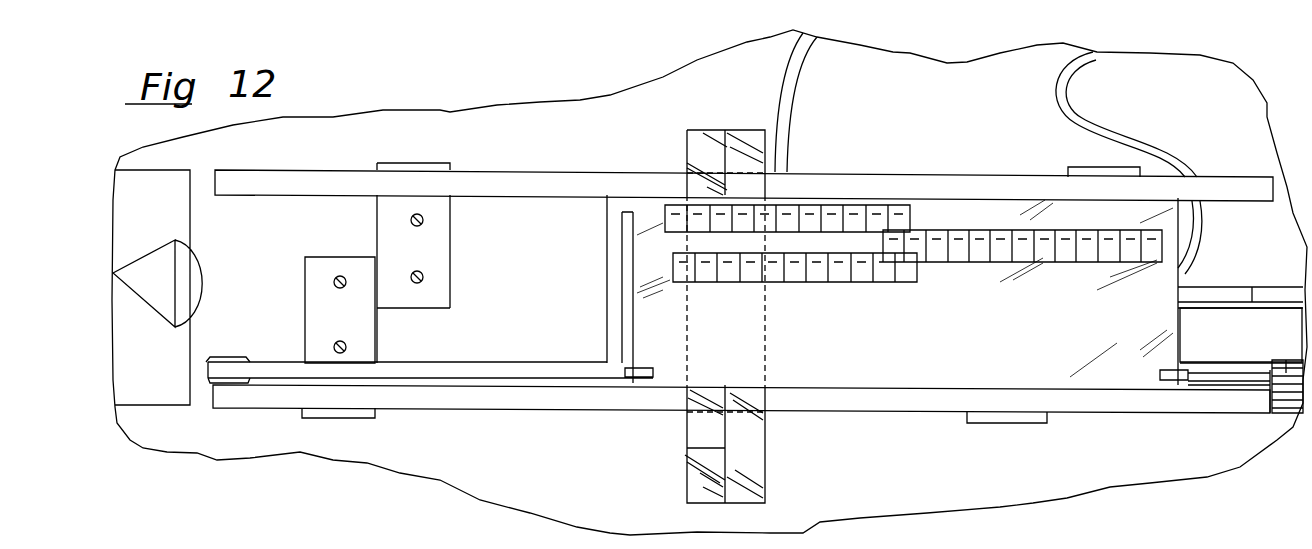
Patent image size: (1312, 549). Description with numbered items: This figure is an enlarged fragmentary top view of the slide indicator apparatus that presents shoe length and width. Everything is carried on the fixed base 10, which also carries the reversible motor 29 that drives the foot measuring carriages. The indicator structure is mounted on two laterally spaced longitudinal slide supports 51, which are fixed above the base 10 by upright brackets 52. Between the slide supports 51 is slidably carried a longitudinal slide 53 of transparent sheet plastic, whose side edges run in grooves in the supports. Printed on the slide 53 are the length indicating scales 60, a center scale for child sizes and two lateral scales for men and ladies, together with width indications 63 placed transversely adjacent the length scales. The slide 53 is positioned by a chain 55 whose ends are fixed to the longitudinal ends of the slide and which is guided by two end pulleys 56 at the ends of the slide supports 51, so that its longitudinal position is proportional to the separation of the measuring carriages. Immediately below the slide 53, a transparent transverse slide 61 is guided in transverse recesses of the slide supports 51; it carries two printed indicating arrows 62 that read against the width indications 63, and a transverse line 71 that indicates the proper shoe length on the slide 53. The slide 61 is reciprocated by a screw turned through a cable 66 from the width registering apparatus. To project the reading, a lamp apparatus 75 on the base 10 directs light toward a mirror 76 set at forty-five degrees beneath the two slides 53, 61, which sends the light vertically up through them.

The fixed base 10 is at (897, 488).
The reversible motor 29 is at (1240, 356).
The longitudinal slide supports 51 is at (528, 188).
The upright brackets 52 is at (417, 317).
The longitudinal slide 53 is at (1173, 278).
The chain 55 is at (480, 372).
The end pulleys 56 is at (227, 357).
The length indicating scales 60 is at (1055, 226).
The transverse slide 61 is at (750, 463).
The indicating arrows 62 is at (737, 292).
The width indications 63 is at (935, 378).
The cable 66 is at (790, 95).
The transverse line 71 is at (723, 448).
The lamp apparatus 75 is at (167, 397).
The mirror 76 is at (640, 255).